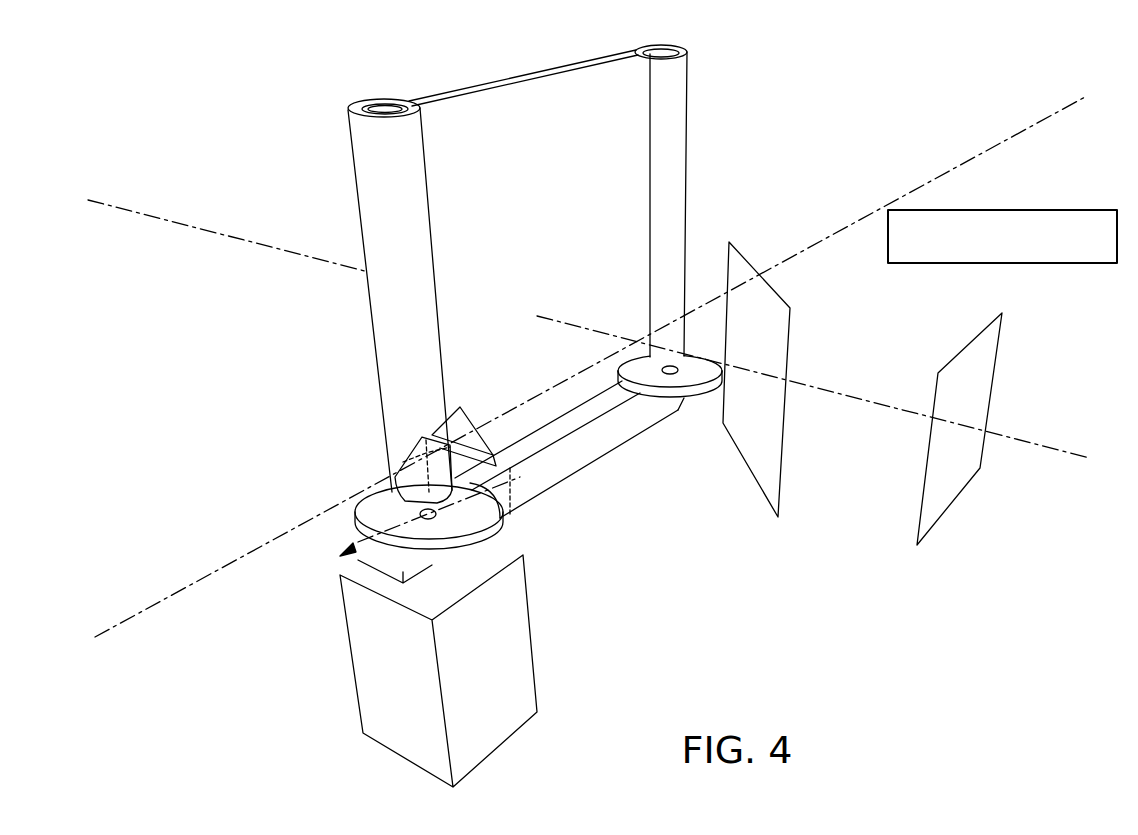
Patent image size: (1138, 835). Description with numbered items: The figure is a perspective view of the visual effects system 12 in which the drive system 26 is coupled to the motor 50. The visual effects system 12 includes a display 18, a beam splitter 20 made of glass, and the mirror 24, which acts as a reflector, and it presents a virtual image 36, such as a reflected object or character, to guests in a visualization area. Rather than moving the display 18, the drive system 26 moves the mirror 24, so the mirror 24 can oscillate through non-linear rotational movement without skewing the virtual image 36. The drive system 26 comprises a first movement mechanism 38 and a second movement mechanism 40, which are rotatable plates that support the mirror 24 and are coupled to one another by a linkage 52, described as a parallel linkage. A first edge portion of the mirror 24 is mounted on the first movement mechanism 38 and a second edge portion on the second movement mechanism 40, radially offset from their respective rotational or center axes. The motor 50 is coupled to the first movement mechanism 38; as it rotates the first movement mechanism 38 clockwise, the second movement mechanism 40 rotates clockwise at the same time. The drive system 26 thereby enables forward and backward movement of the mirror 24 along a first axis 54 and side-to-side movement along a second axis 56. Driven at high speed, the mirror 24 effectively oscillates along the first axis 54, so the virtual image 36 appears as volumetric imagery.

The visual effects system 12 is at (258, 90).
The display 18 is at (950, 473).
The beam splitter 20 is at (760, 442).
The mirror 24 is at (402, 317).
The drive system 26 is at (349, 483).
The virtual image 36 is at (1002, 209).
The first movement mechanism 38 is at (390, 537).
The second movement mechanism 40 is at (690, 382).
The motor 50 is at (390, 622).
The linkage 52 is at (565, 472).
The first axis 54 is at (205, 230).
The second axis 56 is at (998, 142).